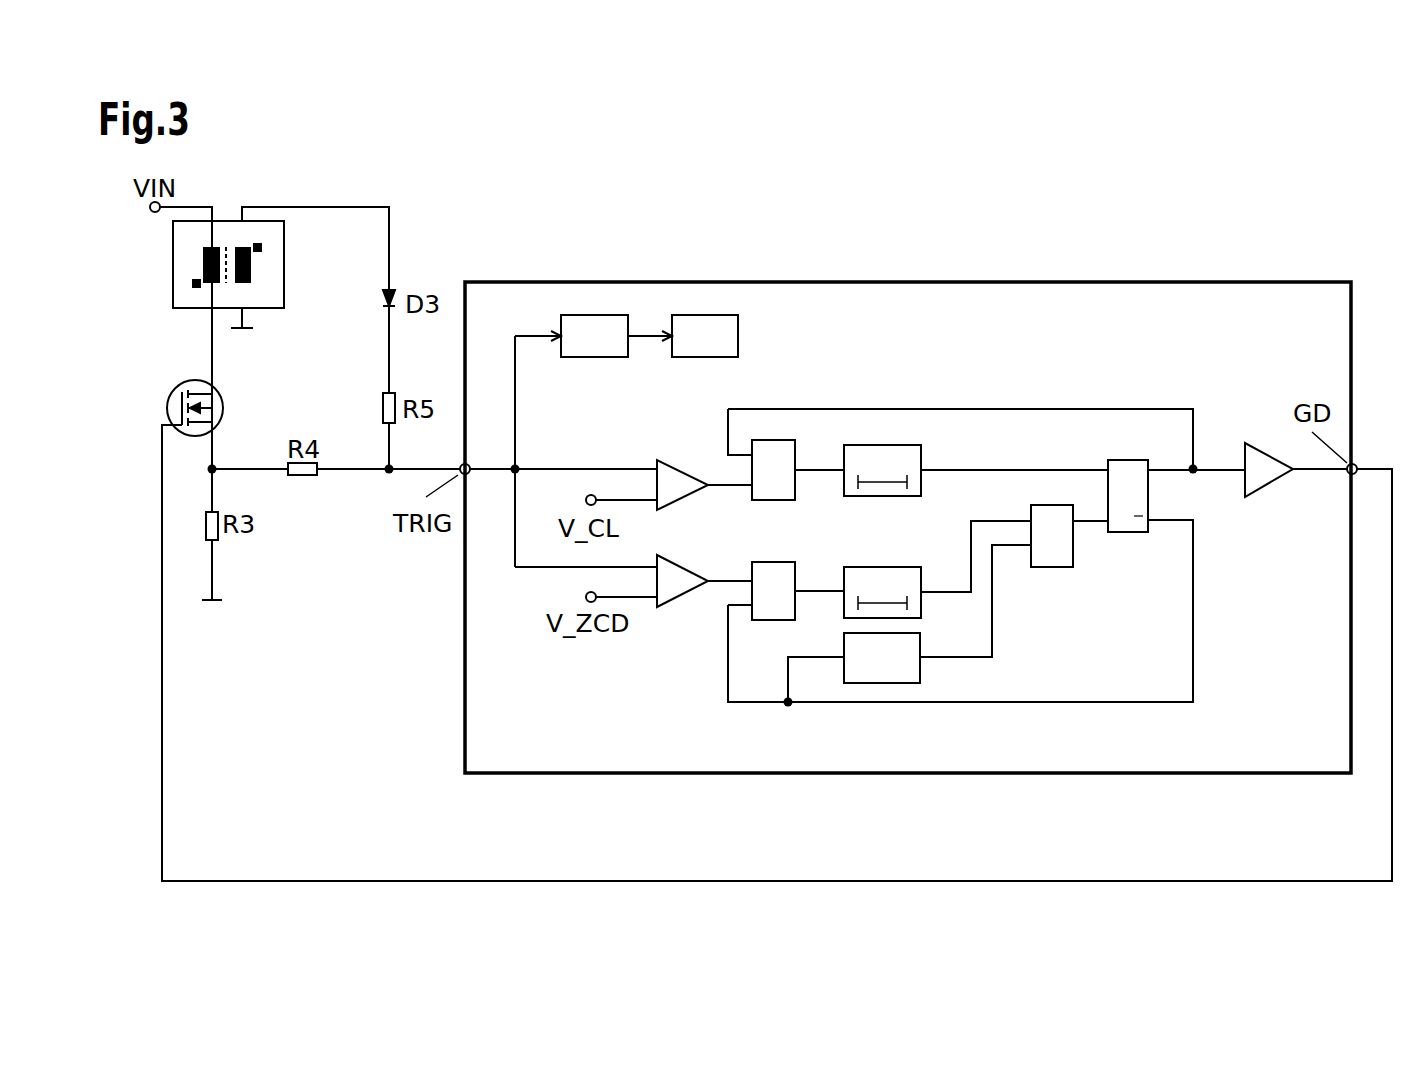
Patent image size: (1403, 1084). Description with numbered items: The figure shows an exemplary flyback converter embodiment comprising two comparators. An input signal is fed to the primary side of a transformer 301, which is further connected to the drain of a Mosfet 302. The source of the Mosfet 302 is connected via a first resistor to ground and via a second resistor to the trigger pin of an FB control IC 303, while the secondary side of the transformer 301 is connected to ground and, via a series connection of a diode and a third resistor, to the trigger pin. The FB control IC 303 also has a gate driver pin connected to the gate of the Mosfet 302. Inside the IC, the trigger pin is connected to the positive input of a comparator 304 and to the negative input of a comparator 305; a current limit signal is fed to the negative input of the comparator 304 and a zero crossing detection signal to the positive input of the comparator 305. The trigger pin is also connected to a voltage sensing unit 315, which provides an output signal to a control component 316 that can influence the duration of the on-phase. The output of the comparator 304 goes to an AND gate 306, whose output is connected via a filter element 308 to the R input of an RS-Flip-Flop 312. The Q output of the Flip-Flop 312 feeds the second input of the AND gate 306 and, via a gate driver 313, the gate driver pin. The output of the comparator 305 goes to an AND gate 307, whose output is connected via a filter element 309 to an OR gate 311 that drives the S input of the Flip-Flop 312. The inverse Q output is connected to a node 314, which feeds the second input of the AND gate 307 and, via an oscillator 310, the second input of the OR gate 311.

The transformer 301 is at (256, 300).
The Mosfet 302 is at (222, 408).
The FB control IC 303 is at (1047, 282).
The comparator 304 is at (681, 473).
The comparator 305 is at (678, 600).
The AND gate 306 is at (772, 440).
The AND gate 307 is at (770, 562).
The filter element 308 is at (856, 445).
The filter element 309 is at (888, 567).
The oscillator 310 is at (900, 683).
The OR gate 311 is at (1065, 567).
The RS-Flip-Flop 312 is at (1128, 460).
The gate driver 313 is at (1265, 487).
The node 314 is at (792, 720).
The voltage sensing unit 315 is at (593, 315).
The control component 316 is at (705, 315).